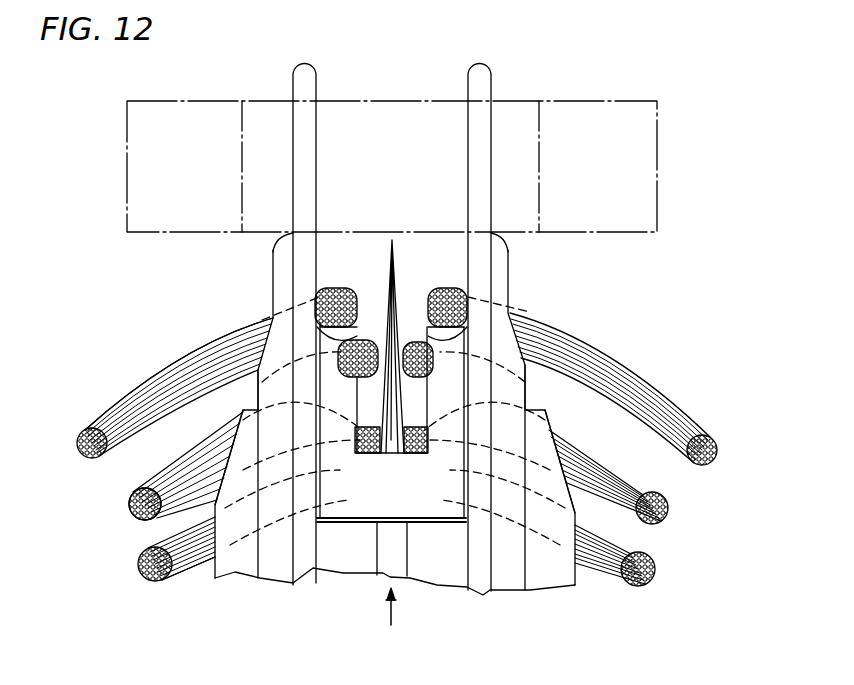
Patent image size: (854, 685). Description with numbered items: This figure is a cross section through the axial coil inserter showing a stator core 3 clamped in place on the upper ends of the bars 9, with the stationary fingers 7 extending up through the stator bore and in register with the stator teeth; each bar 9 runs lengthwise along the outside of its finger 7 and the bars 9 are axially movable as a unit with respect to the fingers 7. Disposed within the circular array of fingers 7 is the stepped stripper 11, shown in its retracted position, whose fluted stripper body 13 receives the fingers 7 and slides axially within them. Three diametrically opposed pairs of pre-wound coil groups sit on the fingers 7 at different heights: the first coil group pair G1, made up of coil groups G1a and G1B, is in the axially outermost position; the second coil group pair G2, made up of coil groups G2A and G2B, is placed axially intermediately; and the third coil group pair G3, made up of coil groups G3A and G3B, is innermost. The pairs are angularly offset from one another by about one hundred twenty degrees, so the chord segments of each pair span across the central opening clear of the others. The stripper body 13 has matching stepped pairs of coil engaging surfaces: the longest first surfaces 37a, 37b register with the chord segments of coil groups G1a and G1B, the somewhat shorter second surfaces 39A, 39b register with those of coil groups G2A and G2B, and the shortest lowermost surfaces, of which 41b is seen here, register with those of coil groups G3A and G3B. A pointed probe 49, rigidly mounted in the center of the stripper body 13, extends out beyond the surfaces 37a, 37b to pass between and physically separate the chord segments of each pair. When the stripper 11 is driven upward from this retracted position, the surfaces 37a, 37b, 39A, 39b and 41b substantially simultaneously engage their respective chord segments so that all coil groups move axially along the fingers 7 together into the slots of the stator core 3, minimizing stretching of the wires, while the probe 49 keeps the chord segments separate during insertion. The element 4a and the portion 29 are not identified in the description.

The stator core 3 is at (586, 100).
The fingers 7 is at (289, 256).
The bar 9 is at (284, 378).
The stripper 11 is at (448, 521).
The stripper body 13 is at (391, 487).
The cable holding portion 29 is at (250, 433).
The first coil engaging surface 37a is at (337, 348).
The first coil engaging surface 37b is at (465, 336).
The second coil engaging surface 39A is at (338, 356).
The second coil engaging surface 39b is at (546, 326).
The third coil engaging surface 41b is at (362, 457).
The bottom contact a 4a is at (423, 455).
The pointed probe 49 is at (397, 295).
The first coil group pair G1 is at (160, 354).
The first coil group G1a is at (151, 378).
The first coil group G1B is at (618, 367).
The second coil group pair G2 is at (138, 475).
The second coil group G2A is at (131, 520).
The second coil group G2B is at (668, 491).
The third coil group pair G3 is at (143, 595).
The third coil group G3A is at (653, 577).
The third coil group G3B is at (182, 587).